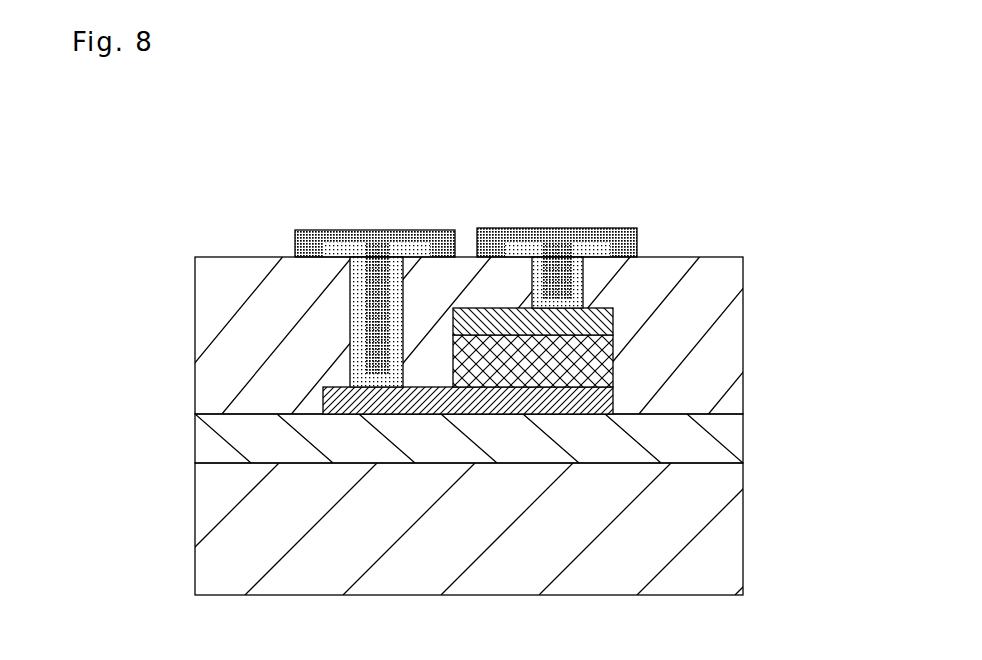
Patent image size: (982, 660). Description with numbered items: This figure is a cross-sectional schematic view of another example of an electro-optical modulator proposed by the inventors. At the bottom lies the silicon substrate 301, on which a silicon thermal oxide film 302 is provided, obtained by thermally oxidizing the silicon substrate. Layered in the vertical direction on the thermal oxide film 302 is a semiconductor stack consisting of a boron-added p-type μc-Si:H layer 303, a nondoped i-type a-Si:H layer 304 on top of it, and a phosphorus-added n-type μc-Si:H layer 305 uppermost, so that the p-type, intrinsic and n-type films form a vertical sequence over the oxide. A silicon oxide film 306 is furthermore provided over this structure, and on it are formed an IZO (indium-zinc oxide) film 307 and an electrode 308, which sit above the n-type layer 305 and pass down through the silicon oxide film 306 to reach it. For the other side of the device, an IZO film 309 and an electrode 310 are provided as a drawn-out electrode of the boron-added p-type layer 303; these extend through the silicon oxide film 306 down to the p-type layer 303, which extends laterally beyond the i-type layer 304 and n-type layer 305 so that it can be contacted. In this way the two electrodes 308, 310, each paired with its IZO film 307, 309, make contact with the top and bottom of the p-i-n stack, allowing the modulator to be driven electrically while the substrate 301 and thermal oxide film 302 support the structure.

The silicon substrate 301 is at (733, 529).
The silicon thermal oxide film 302 is at (737, 436).
The boron-added p-type μc-Si:H layer 303 is at (323, 397).
The nondoped i-type a-Si:H layer 304 is at (613, 363).
The phosphorus-added n-type μc-Si:H layer 305 is at (613, 310).
The silicon oxide film 306 is at (737, 368).
The IZO film 307 is at (595, 232).
The electrode 308 is at (490, 240).
The IZO film 309 is at (415, 245).
The electrode 310 is at (310, 240).